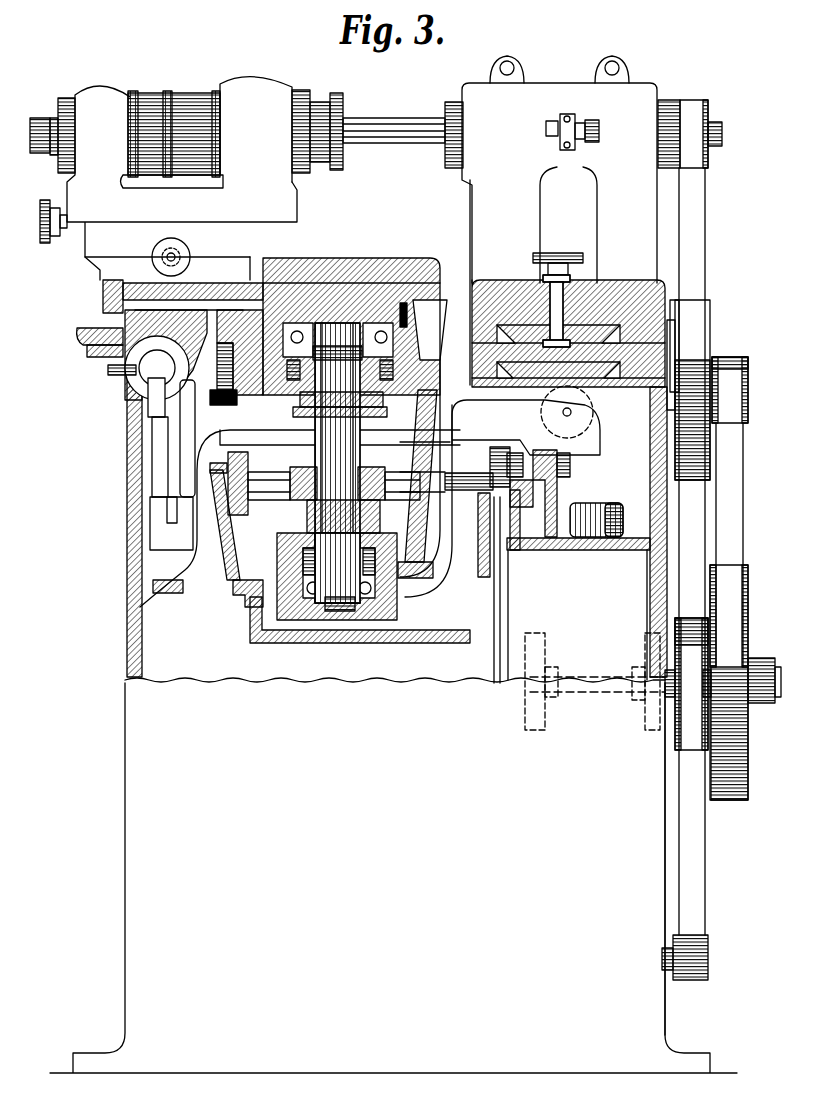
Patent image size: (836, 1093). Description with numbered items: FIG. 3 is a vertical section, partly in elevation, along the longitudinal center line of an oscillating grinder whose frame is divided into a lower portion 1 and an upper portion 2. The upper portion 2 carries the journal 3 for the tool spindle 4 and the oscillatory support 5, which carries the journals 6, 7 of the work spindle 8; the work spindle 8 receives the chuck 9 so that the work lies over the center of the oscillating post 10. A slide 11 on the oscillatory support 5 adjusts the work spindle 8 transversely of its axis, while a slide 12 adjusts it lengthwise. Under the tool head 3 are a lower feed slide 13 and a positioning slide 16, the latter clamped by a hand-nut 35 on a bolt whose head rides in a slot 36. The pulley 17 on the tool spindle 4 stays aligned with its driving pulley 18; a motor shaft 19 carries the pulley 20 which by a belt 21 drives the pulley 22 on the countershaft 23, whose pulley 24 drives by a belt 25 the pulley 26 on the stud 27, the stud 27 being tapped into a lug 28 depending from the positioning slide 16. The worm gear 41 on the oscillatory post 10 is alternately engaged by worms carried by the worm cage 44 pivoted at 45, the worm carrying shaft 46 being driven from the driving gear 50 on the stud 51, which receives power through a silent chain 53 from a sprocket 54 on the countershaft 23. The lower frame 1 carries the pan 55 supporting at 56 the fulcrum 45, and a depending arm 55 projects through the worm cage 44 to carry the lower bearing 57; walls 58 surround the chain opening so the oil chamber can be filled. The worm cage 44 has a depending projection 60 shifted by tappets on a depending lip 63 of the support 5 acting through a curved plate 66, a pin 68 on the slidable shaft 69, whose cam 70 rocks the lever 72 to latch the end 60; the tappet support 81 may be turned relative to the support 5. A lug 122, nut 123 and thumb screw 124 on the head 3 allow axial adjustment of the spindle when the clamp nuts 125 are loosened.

The lower frame portion 1 is at (140, 712).
The upper frame portion 2 is at (78, 337).
The journal 3 is at (530, 90).
The tool spindle 4 is at (398, 131).
The oscillatory support 5 is at (305, 280).
The journal 6 is at (97, 92).
The journal 7 is at (245, 85).
The work spindle 8 is at (45, 118).
The chuck 9 is at (318, 102).
The oscillating post 10 is at (335, 330).
The slide 11 is at (105, 262).
The slide 12 is at (92, 228).
The feed slide 13 is at (688, 358).
The positioning slide 16 is at (700, 332).
The pulley 17 is at (710, 118).
The driving pulley 18 is at (700, 295).
The motor shaft 19 is at (665, 962).
The pulley 20 is at (708, 950).
The belt 21 is at (696, 853).
The pulley 22 is at (676, 620).
The countershaft 23 is at (778, 680).
The pulley 24 is at (750, 605).
The belt 25 is at (735, 490).
The pulley 26 is at (748, 368).
The stud 27 is at (750, 395).
The lug 28 is at (672, 316).
The hand-nut 35 is at (545, 255).
The slot 36 is at (588, 335).
The worm gear 41 is at (380, 478).
The worm cage 44 is at (472, 440).
The pivot 45 is at (595, 508).
The worm carrying shaft 46 is at (463, 480).
The driving gear 50 is at (530, 550).
The stud 51 is at (505, 440).
The silent chain 53 is at (500, 606).
The sprocket 54 is at (498, 686).
The pan 55 is at (478, 548).
The support 56 is at (605, 550).
The lower bearing 57 is at (288, 598).
The walls 58 is at (478, 520).
The depending projection 60 is at (150, 532).
The depending lip 63 is at (103, 300).
The curved plate 66 is at (92, 355).
The pin 68 is at (118, 378).
The slidable shaft 69 is at (167, 360).
The cam 70 is at (150, 398).
The lever 72 is at (180, 464).
The tappet support 81 is at (258, 283).
The lug 122 is at (552, 121).
The nut 123 is at (580, 123).
The thumb screw 124 is at (599, 131).
The clamp nuts 125 is at (507, 60).